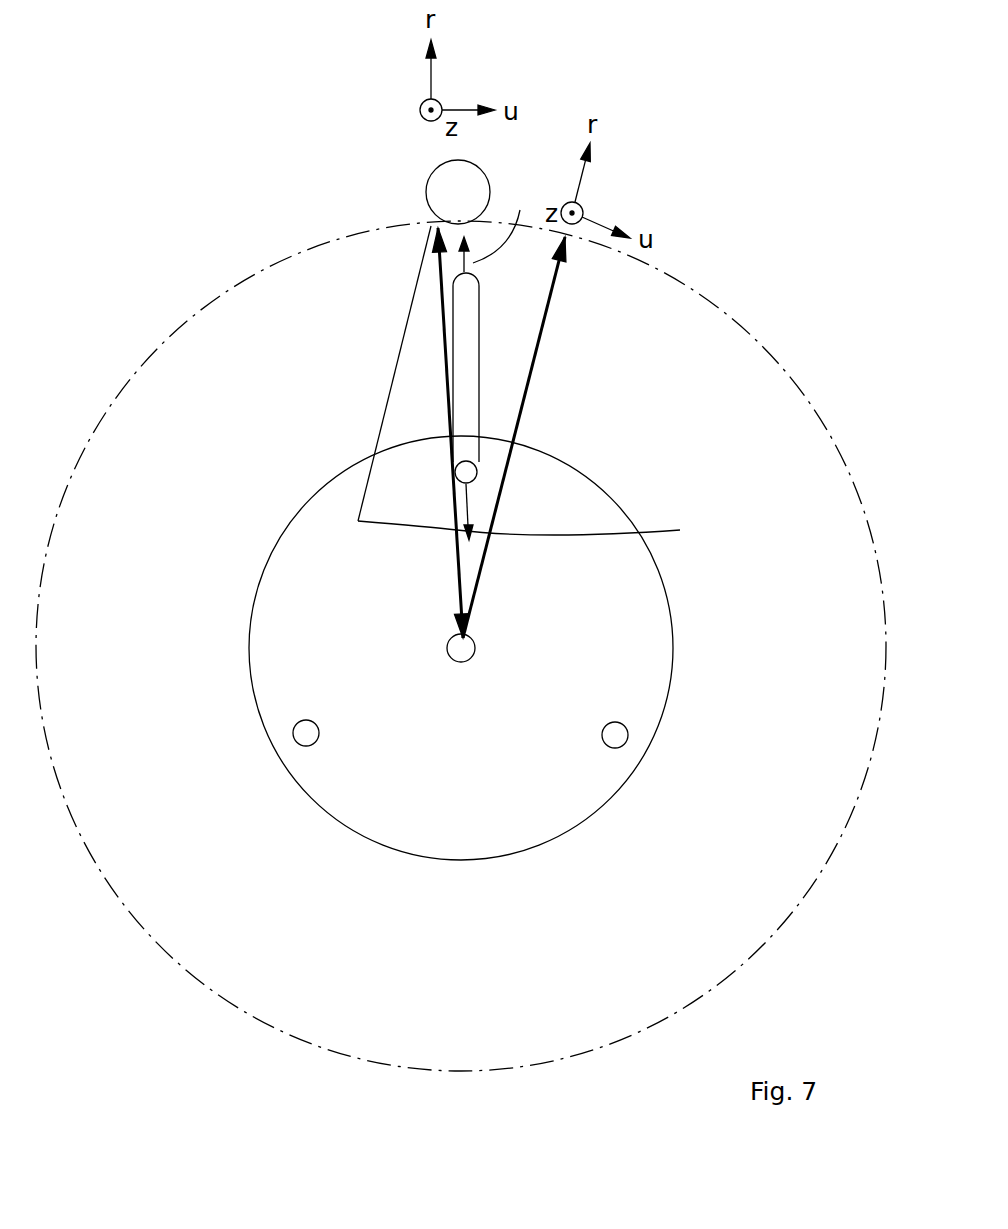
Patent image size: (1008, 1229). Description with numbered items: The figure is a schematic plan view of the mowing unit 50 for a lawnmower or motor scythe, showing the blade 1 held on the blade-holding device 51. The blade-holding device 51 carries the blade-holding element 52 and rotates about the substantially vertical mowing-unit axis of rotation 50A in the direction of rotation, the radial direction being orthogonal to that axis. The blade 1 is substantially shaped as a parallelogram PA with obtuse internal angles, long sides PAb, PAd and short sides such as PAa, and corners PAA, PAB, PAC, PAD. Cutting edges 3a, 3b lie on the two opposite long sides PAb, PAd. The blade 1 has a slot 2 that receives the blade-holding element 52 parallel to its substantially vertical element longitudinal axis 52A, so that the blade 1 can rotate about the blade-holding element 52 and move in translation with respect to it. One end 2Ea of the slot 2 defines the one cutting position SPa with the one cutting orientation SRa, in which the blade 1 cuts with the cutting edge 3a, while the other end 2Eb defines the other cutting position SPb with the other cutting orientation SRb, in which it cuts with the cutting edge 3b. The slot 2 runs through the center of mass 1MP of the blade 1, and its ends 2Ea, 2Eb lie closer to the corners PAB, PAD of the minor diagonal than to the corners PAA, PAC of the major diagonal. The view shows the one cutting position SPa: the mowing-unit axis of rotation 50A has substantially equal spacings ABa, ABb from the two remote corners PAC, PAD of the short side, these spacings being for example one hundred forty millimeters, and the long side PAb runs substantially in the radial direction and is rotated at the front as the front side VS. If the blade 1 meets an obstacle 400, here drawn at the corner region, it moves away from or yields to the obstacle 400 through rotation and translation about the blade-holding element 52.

The mowing unit 50 is at (148, 264).
The mowing-unit axis of rotation 50A is at (461, 662).
The blade-holding device 51 is at (470, 837).
The blade-holding element 52 is at (477, 460).
The element longitudinal axis 52A is at (466, 474).
The obstacle 400 is at (453, 182).
The corner of the parallelogram PAD is at (445, 221).
The one cutting orientation SRa is at (510, 219).
The corner of the parallelogram PAC is at (570, 240).
The other end of the slot 2Eb is at (455, 266).
The other cutting position SPb is at (452, 284).
The side of the parallelogram PAd is at (410, 318).
The center of mass 1MP is at (467, 373).
The blade 1 is at (413, 378).
The parallelogram PA is at (397, 400).
The slot 2 is at (463, 413).
The cutting edge 3b is at (377, 445).
The one cutting position SPa is at (460, 478).
The one end of the slot 2Ea is at (460, 489).
The corner of the parallelogram PAA is at (357, 521).
The side of the parallelogram PAa is at (387, 527).
The spacing ABb is at (453, 590).
The front side VS is at (552, 307).
The side of the parallelogram PAb is at (538, 353).
The cutting edge 3a is at (527, 398).
The other cutting orientation SRb is at (456, 500).
The corner of the parallelogram PAB is at (547, 528).
The spacing ABa is at (466, 572).